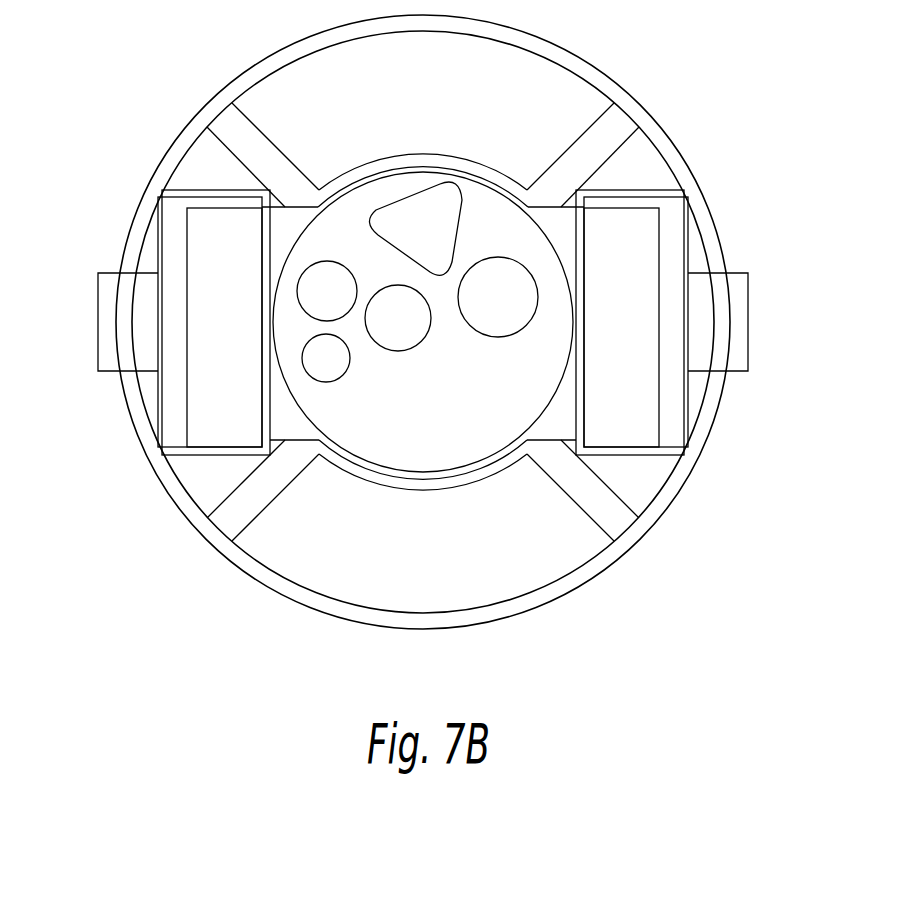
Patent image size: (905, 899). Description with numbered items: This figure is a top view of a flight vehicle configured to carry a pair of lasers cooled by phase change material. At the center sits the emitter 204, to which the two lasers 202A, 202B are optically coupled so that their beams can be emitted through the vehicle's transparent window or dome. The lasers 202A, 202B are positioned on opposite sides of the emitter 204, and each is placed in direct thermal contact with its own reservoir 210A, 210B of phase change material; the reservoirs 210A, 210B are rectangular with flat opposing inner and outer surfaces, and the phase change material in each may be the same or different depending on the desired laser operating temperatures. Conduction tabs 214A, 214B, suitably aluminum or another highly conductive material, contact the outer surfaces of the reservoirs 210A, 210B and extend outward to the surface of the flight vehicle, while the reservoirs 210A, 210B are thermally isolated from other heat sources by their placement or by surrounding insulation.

The emitter 204 is at (439, 432).
The laser 202A is at (218, 357).
The laser 202B is at (625, 358).
The reservoir 210A is at (167, 417).
The reservoir 210B is at (675, 418).
The conduction tab 214A is at (98, 296).
The conduction tab 214B is at (748, 297).